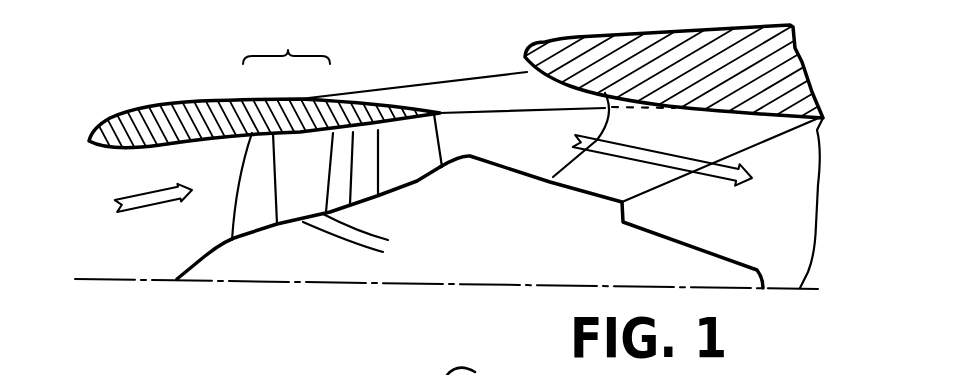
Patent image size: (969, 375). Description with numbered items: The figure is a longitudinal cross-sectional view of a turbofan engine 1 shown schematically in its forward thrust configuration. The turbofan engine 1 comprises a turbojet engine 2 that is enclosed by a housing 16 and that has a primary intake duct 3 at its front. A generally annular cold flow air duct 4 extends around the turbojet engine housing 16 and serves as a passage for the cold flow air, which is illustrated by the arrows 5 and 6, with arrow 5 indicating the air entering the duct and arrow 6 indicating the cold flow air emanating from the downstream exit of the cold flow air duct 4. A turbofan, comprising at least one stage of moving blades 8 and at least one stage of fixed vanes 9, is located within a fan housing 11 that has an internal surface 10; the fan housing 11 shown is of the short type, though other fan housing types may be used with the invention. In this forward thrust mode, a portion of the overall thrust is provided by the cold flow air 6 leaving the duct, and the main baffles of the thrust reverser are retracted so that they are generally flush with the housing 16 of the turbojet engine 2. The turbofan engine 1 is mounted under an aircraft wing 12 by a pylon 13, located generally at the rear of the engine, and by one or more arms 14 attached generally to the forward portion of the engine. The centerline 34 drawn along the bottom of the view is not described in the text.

The turbofan engine 1 is at (76, 120).
The turbojet engine 2 is at (263, 256).
The primary intake duct 3 is at (350, 237).
The cold flow air duct 4 is at (337, 177).
The cold flow air arrow 5 is at (143, 202).
The cold flow air arrow 6 is at (573, 133).
The moving blades 8 is at (258, 148).
The fixed vanes 9 is at (342, 150).
The internal surface 10 is at (128, 151).
The fan housing 11 is at (153, 118).
The aircraft wing 12 is at (638, 55).
The pylon 13 is at (753, 124).
The arms 14 is at (486, 97).
The housing 16 is at (475, 158).
The engine centerline axis 34 is at (433, 281).